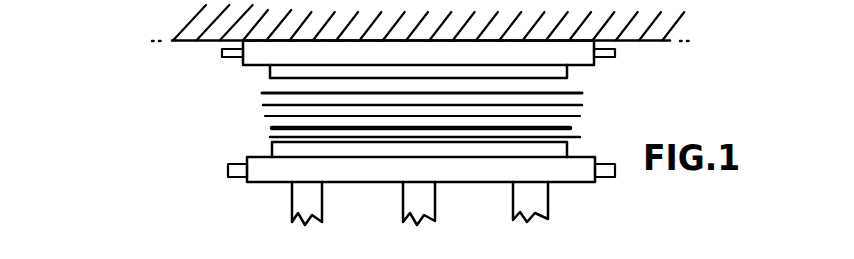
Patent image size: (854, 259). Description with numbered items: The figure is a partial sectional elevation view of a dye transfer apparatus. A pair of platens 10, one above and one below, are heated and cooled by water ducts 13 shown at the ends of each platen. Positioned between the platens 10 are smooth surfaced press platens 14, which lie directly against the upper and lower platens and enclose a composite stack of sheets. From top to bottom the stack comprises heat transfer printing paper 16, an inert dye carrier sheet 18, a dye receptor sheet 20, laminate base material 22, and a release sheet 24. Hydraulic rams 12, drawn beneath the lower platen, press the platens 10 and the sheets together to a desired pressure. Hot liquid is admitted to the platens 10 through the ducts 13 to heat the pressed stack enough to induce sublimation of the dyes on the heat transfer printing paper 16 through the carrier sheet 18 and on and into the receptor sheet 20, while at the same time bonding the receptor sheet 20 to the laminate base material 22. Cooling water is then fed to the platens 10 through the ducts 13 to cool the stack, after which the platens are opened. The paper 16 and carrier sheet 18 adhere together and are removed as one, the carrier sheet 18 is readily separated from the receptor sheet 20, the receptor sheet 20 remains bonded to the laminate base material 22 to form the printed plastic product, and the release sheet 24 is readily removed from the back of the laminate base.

The platens 10 is at (584, 42).
The hydraulic rams 12 is at (322, 222).
The water ducts 13 is at (226, 52).
The press platens 14 is at (567, 73).
The heat transfer printing paper 16 is at (262, 92).
The inert dye carrier sheet 18 is at (263, 105).
The dye receptor sheet 20 is at (265, 117).
The laminate base material 22 is at (568, 127).
The release sheet 24 is at (267, 137).